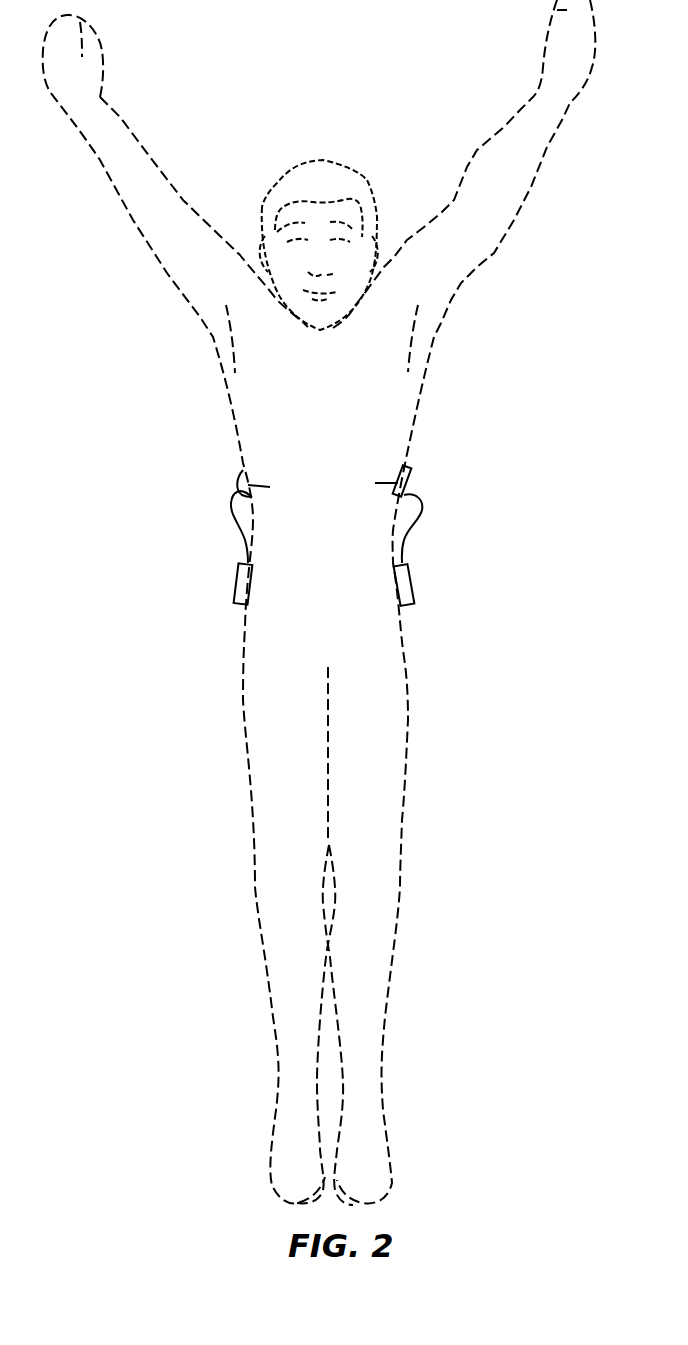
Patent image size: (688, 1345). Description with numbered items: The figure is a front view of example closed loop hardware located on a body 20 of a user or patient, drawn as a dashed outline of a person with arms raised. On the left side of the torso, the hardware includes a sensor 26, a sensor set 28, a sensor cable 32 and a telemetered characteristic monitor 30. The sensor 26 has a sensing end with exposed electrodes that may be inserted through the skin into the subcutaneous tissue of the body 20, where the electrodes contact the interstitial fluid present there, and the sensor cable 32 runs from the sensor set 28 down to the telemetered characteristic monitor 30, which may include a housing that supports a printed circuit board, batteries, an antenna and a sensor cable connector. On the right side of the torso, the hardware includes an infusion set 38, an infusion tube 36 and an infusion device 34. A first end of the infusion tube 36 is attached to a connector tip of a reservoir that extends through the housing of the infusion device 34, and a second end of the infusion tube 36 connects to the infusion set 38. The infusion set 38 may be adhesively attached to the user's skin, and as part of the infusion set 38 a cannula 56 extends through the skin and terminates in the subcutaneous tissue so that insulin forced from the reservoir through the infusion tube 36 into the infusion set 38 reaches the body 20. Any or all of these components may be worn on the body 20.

The body 20 is at (464, 331).
The sensor 26 is at (265, 484).
The sensor set 28 is at (239, 478).
The sensor cable 32 is at (230, 505).
The telemetered characteristic monitor 30 is at (236, 584).
The cannula 56 is at (383, 483).
The infusion set 38 is at (408, 467).
The infusion tube 36 is at (422, 504).
The infusion device 34 is at (415, 582).